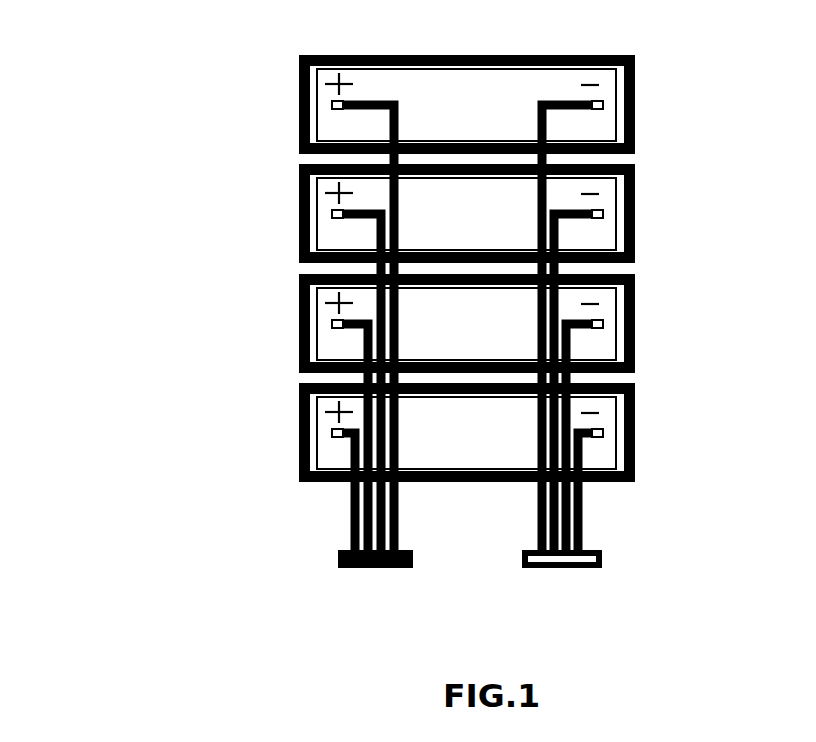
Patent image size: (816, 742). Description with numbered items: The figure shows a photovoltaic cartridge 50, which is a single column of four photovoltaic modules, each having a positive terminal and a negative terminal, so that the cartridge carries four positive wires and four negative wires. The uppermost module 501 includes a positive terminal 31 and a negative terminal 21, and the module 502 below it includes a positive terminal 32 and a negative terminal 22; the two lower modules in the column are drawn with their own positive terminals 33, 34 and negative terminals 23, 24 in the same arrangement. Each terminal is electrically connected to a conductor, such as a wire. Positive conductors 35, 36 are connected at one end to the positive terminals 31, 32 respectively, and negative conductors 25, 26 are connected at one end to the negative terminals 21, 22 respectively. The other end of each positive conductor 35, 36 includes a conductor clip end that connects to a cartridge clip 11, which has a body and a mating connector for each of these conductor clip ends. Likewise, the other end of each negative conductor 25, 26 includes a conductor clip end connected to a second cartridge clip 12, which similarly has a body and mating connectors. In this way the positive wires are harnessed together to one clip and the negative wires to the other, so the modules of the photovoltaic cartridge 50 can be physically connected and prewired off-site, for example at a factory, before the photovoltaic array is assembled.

The photovoltaic cartridge 50 is at (150, 132).
The negative terminal 21 is at (603, 103).
The negative terminal 22 is at (603, 213).
The negative electrode terminal of third cell 23 is at (603, 323).
The negative electrode terminal of fourth cell 24 is at (603, 432).
The positive terminal 31 is at (332, 103).
The positive terminal 32 is at (332, 213).
The positive electrode terminal of third cell 33 is at (332, 323).
The positive electrode terminal of fourth cell 34 is at (332, 432).
The negative conductor 25 is at (547, 123).
The negative conductor 26 is at (558, 233).
The positive conductor 35 is at (389, 123).
The positive conductor 36 is at (377, 235).
The module 501 is at (607, 112).
The module 502 is at (607, 222).
The cartridge clip 11 is at (340, 550).
The cartridge clip 12 is at (602, 550).